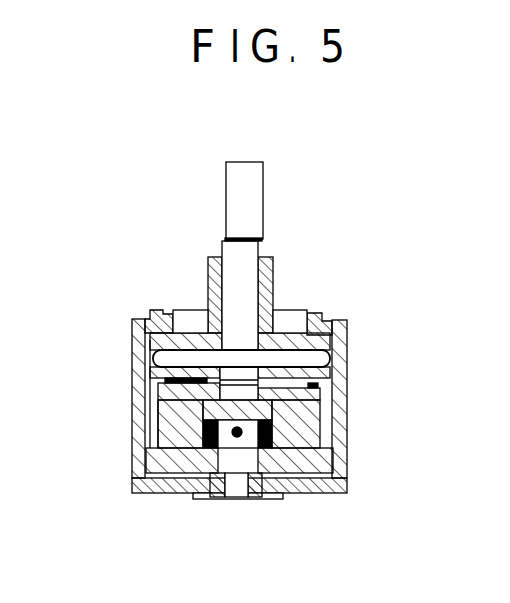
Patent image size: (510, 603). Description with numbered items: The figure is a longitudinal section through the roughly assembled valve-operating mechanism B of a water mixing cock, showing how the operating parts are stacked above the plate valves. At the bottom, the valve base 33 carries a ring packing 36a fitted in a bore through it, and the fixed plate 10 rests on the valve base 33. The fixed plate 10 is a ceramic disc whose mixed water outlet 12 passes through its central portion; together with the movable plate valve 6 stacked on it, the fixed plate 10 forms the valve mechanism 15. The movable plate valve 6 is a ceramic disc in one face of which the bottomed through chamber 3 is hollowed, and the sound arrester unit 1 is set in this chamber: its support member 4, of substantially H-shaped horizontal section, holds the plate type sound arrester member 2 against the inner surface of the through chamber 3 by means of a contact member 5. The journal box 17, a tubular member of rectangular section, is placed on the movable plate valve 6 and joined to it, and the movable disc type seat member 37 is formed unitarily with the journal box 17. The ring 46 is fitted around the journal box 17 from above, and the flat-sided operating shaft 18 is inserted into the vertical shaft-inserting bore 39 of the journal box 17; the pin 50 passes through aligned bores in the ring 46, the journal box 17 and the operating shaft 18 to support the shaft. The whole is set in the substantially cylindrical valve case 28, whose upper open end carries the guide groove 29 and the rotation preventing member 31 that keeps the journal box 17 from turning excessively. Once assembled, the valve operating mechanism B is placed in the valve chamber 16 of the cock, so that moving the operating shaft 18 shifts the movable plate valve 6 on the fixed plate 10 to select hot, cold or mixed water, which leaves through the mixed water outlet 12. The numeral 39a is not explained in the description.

The valve-operating mechanism B is at (213, 198).
The operating shaft 18 is at (253, 197).
The shaft-inserting bore 39 is at (208, 268).
The plate recess 39a is at (183, 310).
The ring 46 is at (167, 308).
The journal box 17 is at (268, 318).
The rotation preventing member 31 is at (305, 310).
The guide groove 29 is at (340, 316).
The pin 50 is at (349, 350).
The valve mechanism 15 is at (315, 385).
The sound arrester unit 1 is at (320, 400).
The valve case 28 is at (338, 415).
The movable plate valve 6 is at (293, 428).
The through chamber 3 is at (330, 494).
The valve chamber 16 is at (158, 383).
The movable disc type seat member 37 is at (158, 394).
The fixed plate 10 is at (130, 478).
The valve base 33 is at (168, 484).
The sound arrester member 2 is at (208, 466).
The ring packing 36a is at (227, 450).
The contact member 5 is at (238, 440).
The support member 4 is at (261, 448).
The mixed water outlet 12 is at (318, 482).